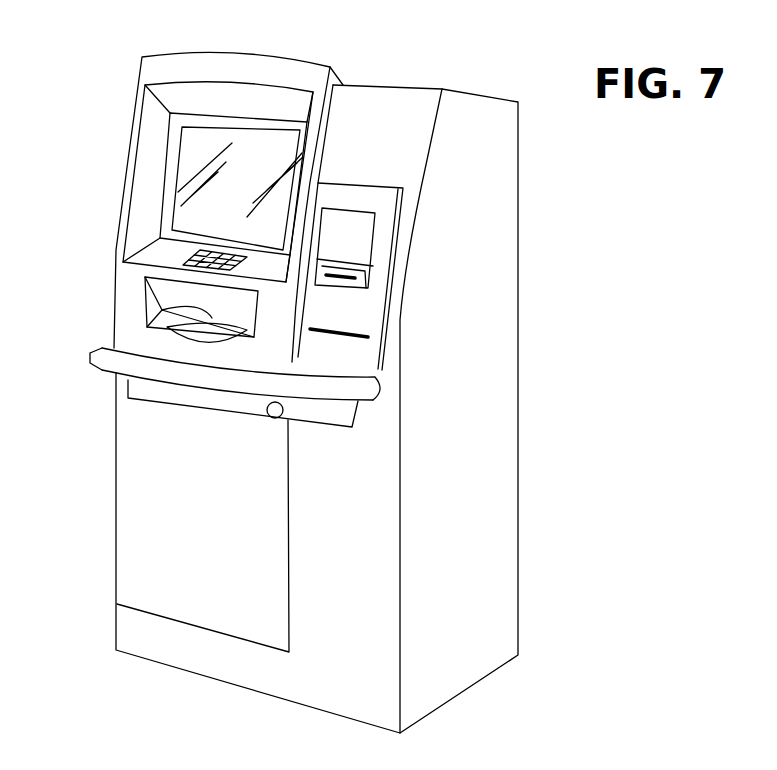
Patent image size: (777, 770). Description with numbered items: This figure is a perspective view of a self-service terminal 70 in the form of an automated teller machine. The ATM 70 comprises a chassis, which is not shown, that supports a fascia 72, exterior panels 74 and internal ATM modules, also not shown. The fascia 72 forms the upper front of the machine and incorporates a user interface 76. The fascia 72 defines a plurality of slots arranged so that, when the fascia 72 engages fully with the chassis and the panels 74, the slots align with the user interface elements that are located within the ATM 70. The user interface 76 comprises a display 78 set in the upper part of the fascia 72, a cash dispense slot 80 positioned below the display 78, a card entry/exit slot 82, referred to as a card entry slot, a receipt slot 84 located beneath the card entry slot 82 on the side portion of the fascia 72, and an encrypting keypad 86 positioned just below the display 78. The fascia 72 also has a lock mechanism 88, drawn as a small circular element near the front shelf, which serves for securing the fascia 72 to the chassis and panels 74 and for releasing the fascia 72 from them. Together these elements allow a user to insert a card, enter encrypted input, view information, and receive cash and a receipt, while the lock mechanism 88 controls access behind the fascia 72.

The self-service terminal 70 is at (110, 56).
The fascia 72 is at (313, 60).
The exterior panels 74 is at (500, 216).
The user interface 76 is at (98, 219).
The display 78 is at (193, 143).
The cash dispense slot 80 is at (160, 298).
The card entry/exit slot 82 is at (347, 281).
The receipt slot 84 is at (347, 336).
The encrypting keypad 86 is at (226, 258).
The lock mechanism 88 is at (273, 418).